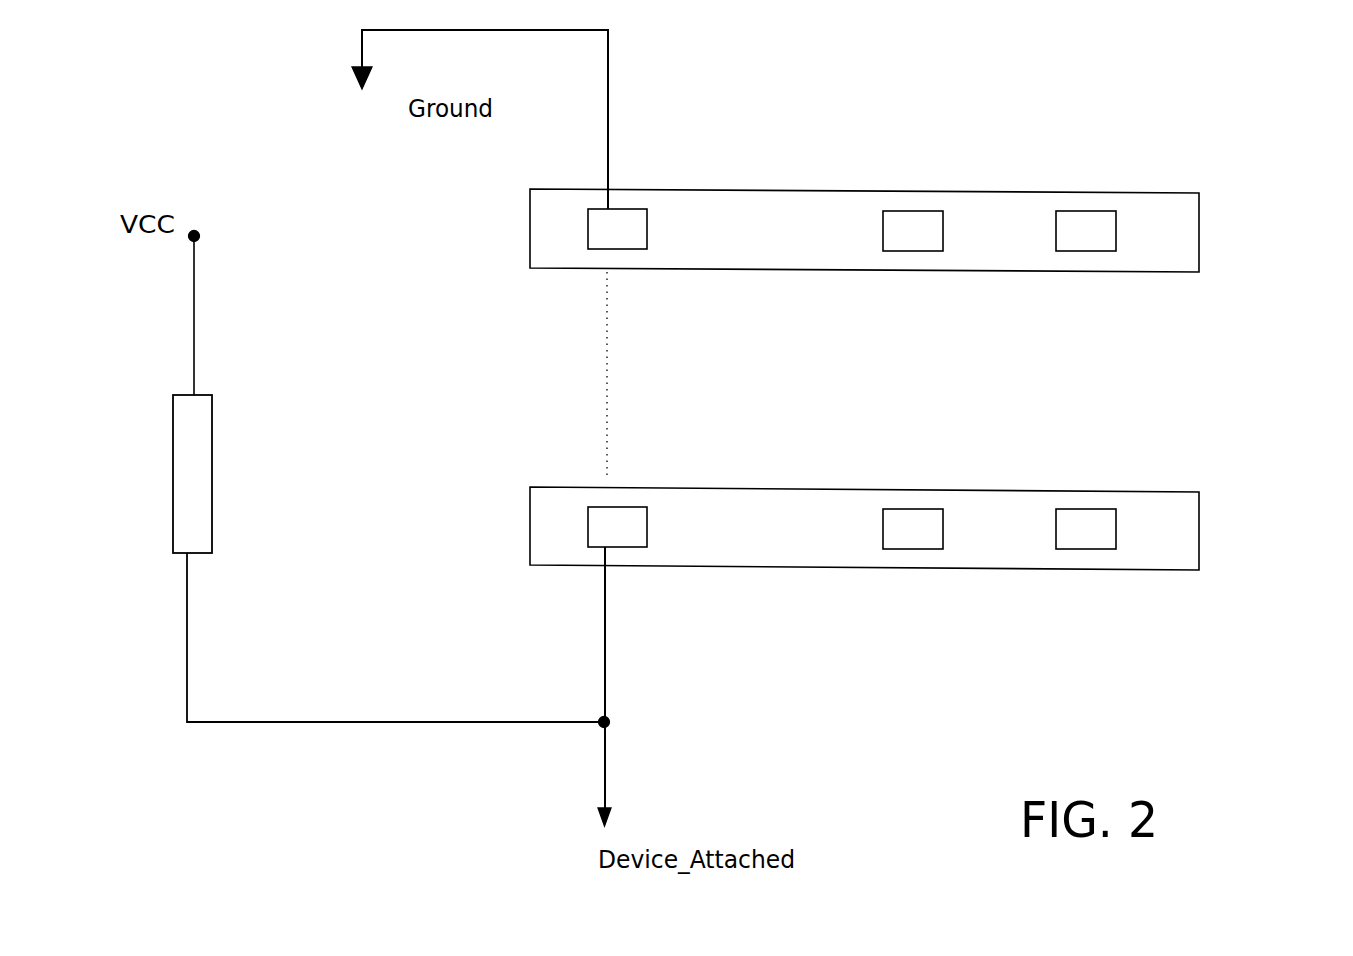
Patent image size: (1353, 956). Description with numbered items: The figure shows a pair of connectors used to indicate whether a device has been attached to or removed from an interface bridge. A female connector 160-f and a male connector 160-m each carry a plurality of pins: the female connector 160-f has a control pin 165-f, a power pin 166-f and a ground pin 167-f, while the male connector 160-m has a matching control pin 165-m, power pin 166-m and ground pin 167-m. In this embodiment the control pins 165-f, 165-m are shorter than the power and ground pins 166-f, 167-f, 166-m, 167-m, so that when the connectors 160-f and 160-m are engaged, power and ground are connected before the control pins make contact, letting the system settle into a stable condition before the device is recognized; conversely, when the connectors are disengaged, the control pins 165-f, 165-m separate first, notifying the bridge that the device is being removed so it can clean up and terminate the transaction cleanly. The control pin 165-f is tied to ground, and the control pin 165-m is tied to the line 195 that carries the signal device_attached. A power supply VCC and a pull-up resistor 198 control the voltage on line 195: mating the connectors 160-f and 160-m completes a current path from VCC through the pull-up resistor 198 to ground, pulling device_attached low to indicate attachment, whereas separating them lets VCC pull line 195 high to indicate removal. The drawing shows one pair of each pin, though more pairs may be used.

The female connector 160-f is at (1199, 241).
The female control pin 165-f is at (617, 209).
The female power pin 166-f is at (912, 211).
The female ground pin 167-f is at (1087, 211).
The male connector 160-m is at (1199, 544).
The male control pin 165-m is at (617, 507).
The male power pin 166-m is at (913, 509).
The male ground pin 167-m is at (1087, 509).
The pull-up resistor 198 is at (212, 504).
The line 195 is at (370, 722).